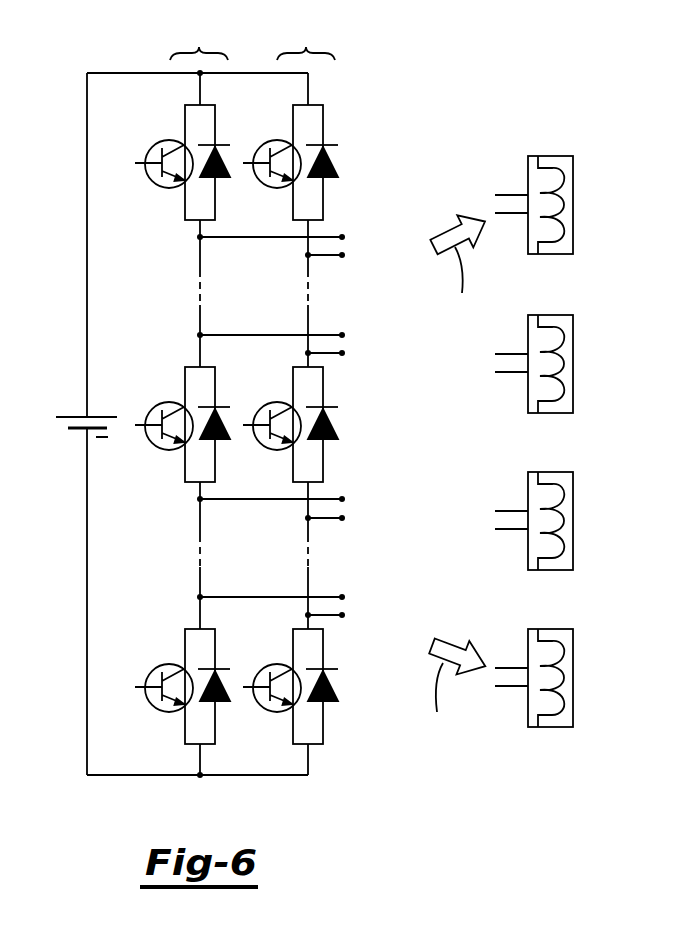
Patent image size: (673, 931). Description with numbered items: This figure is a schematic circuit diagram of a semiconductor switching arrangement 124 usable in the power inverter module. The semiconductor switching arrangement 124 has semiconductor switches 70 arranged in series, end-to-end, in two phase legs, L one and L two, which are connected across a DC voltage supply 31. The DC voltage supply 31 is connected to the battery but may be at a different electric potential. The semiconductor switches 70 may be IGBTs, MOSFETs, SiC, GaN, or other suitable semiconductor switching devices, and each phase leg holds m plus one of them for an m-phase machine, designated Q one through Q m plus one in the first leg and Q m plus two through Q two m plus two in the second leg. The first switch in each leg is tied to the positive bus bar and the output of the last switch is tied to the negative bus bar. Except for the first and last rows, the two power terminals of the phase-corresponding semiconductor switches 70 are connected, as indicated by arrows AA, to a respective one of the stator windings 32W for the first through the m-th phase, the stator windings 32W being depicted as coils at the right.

The semiconductor switching arrangement 124 is at (438, 60).
The semiconductor switch 70 is at (158, 198).
The DC voltage supply 31 is at (60, 455).
The stator winding 32W is at (573, 205).